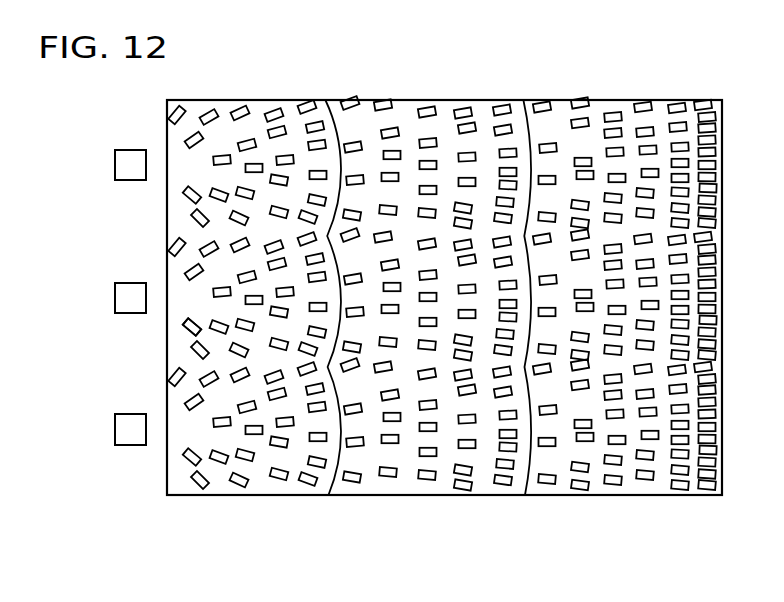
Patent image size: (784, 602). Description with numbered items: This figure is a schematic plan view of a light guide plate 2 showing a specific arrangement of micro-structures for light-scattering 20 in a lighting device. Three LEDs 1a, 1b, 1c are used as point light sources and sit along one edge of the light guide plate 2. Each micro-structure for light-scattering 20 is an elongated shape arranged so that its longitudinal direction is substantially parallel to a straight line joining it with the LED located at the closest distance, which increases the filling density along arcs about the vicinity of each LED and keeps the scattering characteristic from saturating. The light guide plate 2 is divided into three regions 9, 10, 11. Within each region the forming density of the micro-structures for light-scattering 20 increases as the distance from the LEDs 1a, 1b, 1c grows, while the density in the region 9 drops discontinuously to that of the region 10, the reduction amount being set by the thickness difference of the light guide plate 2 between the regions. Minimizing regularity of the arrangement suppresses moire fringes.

The LED 1a is at (114, 164).
The LED 1b is at (114, 296).
The LED 1c is at (114, 432).
The light guide plate 2 is at (165, 464).
The micro-structures for light-scattering 20 is at (188, 329).
The region 9 is at (328, 510).
The region 10 is at (518, 510).
The region 11 is at (727, 510).